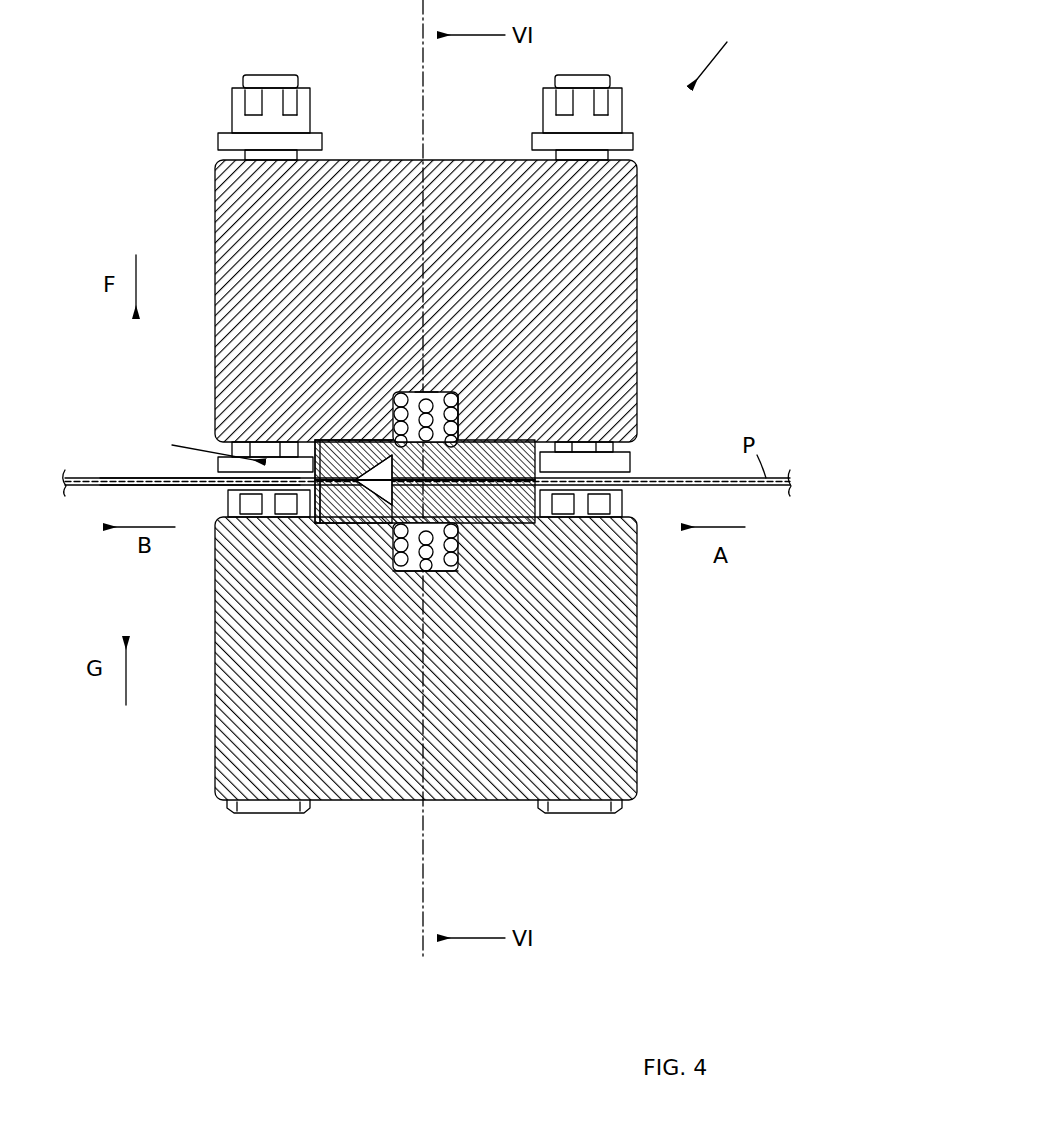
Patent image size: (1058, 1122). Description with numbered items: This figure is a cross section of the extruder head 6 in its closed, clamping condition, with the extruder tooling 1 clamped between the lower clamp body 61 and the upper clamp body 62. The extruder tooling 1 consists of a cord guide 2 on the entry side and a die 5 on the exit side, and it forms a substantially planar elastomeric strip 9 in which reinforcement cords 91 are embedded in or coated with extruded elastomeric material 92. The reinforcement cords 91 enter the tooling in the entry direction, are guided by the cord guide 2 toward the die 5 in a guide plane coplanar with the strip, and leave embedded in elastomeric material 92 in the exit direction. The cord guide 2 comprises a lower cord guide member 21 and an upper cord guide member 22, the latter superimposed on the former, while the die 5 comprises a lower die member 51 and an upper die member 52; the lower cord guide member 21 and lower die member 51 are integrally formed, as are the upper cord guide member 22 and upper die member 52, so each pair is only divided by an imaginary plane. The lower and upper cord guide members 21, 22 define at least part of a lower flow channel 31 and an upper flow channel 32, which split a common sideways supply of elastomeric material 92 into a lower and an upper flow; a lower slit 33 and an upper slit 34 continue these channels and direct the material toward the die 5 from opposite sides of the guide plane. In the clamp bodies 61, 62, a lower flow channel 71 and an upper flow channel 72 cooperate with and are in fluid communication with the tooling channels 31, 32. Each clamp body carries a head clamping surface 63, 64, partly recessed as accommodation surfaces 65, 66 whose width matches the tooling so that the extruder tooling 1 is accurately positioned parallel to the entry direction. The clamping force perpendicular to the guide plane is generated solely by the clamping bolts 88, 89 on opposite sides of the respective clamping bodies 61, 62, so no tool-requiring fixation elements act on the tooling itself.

The extruder tooling 1 is at (210, 447).
The cord guide 2 is at (560, 438).
The die 5 is at (335, 432).
The extruder head 6 is at (721, 49).
The elastomeric strip 9 is at (100, 478).
The lower cord guide member 21 is at (535, 535).
The upper cord guide member 22 is at (500, 420).
The lower flow channel 31 is at (445, 572).
The upper flow channel 32 is at (447, 395).
The lower slit 33 is at (368, 525).
The upper slit 34 is at (422, 392).
The lower die member 51 is at (340, 525).
The upper die member 52 is at (298, 445).
The lower clamp body 61 is at (624, 772).
The upper clamp body 62 is at (624, 266).
The head clamping surface 63 is at (605, 512).
The head clamping surface 64 is at (590, 460).
The recessed accommodation surface 65 is at (335, 525).
The recessed accommodation surface 66 is at (356, 440).
The lower flow channel 71 is at (462, 555).
The upper flow channel 72 is at (462, 402).
The clamping bolt 88 is at (268, 815).
The clamping bolt 89 is at (288, 80).
The reinforcement cords 91 is at (155, 478).
The elastomeric material 92 is at (190, 487).